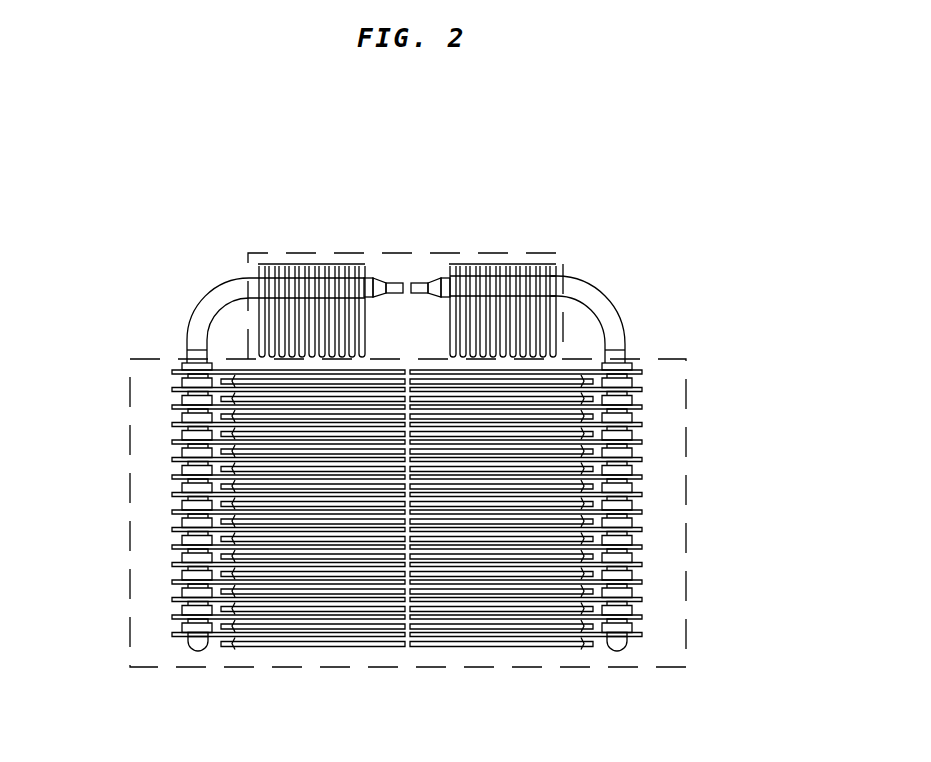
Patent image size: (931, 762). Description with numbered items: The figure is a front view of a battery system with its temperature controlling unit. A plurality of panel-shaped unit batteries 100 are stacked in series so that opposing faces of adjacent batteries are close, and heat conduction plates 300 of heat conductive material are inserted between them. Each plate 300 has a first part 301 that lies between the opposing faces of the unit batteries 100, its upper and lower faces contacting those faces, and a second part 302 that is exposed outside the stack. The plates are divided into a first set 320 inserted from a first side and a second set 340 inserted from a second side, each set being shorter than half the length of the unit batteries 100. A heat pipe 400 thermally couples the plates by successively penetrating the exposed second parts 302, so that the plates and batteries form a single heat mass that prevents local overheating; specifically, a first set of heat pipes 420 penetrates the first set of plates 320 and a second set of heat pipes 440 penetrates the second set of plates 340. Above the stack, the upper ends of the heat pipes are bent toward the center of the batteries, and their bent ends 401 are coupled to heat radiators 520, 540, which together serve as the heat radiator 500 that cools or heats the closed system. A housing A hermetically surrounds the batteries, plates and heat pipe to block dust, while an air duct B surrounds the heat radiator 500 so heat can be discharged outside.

The unit battery 100 is at (408, 557).
The heat conduction plate 300 is at (216, 637).
The first part 301 is at (395, 636).
The second part 302 is at (185, 640).
The first set of heat conduction plates 320 is at (660, 630).
The second set of heat conduction plates 340 is at (160, 589).
The heat pipe 400 is at (406, 311).
The end of the heat pipe 401 is at (438, 281).
The first set of heat pipes 420 is at (623, 295).
The second set of heat pipes 440 is at (196, 300).
The heat radiator 500 is at (461, 265).
The heat radiator of the first set 520 is at (509, 253).
The heat radiator of the second set 540 is at (310, 253).
The housing A is at (688, 652).
The air duct B is at (568, 256).